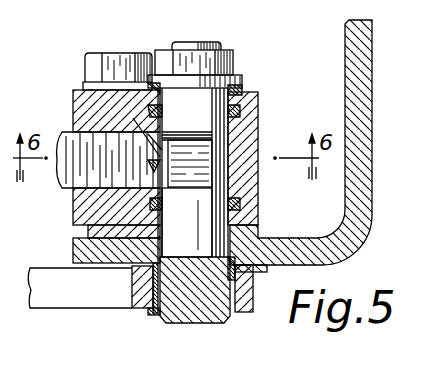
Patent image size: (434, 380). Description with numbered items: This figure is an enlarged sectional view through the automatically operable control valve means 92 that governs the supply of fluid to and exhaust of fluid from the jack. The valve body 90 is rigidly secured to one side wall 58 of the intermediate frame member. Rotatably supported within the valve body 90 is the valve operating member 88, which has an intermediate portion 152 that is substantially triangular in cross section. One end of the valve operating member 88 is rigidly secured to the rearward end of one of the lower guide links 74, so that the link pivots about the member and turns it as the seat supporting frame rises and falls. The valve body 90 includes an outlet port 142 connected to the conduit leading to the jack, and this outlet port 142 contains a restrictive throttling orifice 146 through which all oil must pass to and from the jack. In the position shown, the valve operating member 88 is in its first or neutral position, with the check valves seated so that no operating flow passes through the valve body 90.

The side wall 58 is at (75, 250).
The lower guide link 74 is at (92, 297).
The valve operating member 88 is at (235, 99).
The valve body 90 is at (80, 91).
The control valve means 92 is at (240, 55).
The outlet port 142 is at (190, 163).
The throttling orifice 146 is at (136, 102).
The intermediate portion 152 is at (202, 189).